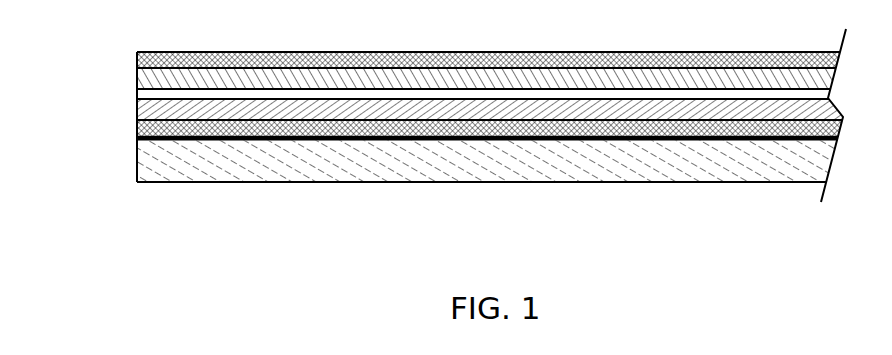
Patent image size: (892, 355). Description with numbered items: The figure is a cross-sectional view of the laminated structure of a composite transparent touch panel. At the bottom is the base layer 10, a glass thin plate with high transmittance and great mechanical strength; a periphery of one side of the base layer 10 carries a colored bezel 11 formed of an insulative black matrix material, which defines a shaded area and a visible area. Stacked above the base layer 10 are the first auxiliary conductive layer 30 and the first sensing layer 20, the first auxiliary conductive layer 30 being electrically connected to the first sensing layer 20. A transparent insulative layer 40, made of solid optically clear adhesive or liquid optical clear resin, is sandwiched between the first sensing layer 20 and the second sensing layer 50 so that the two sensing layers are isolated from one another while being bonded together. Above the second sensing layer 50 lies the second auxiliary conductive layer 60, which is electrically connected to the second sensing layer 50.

The base layer 10 is at (155, 166).
The colored bezel 11 is at (212, 140).
The first sensing layer 20 is at (140, 111).
The first auxiliary conductive layer 30 is at (137, 128).
The insulative layer 40 is at (143, 94).
The second sensing layer 50 is at (143, 78).
The second auxiliary conductive layer 60 is at (137, 59).